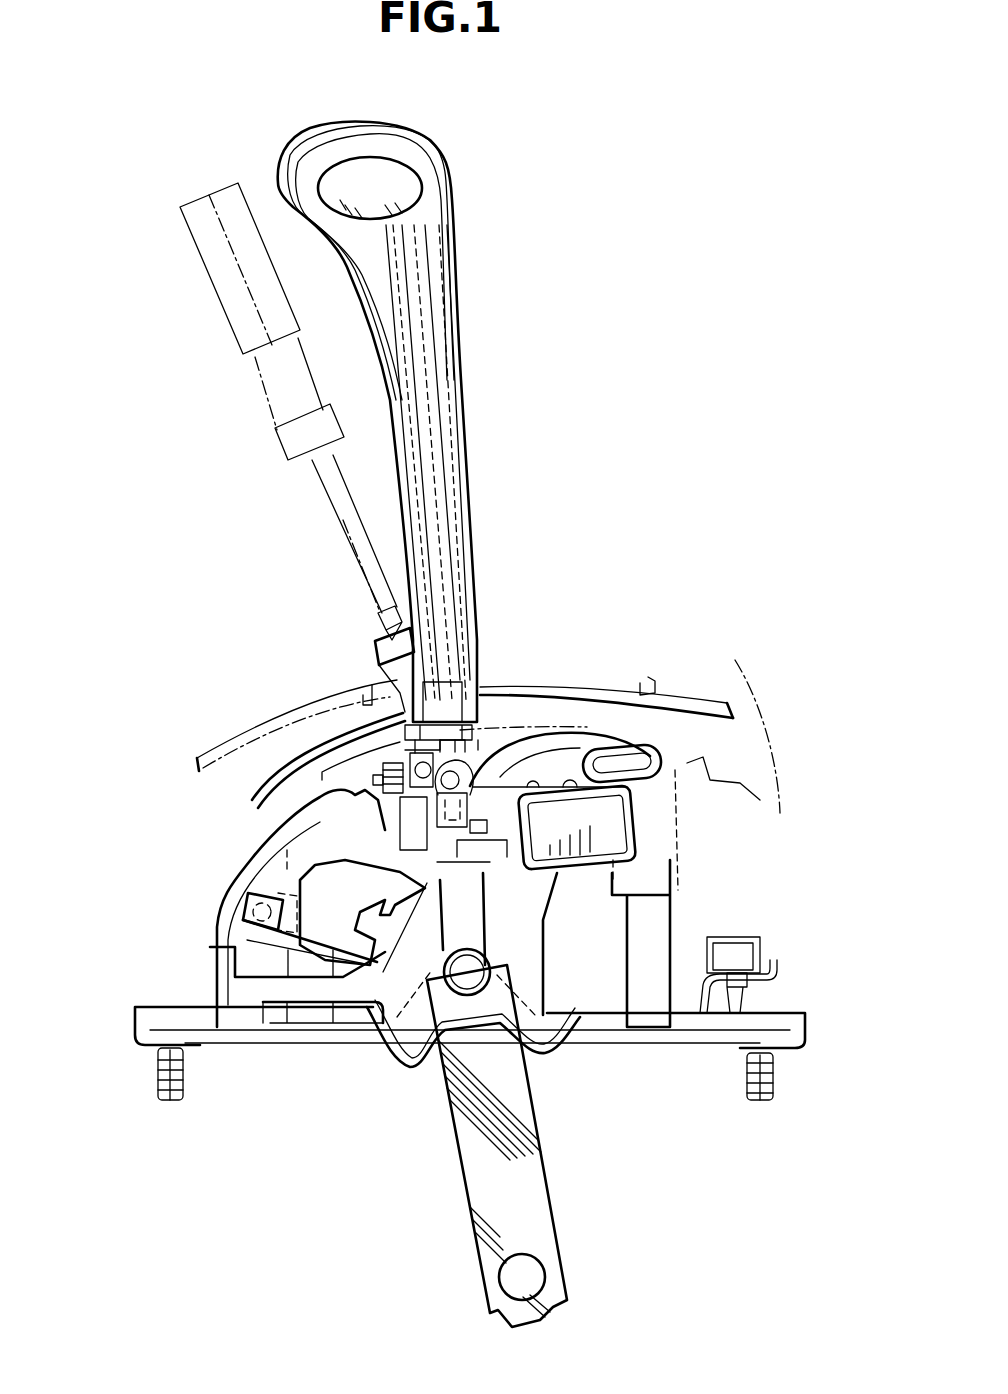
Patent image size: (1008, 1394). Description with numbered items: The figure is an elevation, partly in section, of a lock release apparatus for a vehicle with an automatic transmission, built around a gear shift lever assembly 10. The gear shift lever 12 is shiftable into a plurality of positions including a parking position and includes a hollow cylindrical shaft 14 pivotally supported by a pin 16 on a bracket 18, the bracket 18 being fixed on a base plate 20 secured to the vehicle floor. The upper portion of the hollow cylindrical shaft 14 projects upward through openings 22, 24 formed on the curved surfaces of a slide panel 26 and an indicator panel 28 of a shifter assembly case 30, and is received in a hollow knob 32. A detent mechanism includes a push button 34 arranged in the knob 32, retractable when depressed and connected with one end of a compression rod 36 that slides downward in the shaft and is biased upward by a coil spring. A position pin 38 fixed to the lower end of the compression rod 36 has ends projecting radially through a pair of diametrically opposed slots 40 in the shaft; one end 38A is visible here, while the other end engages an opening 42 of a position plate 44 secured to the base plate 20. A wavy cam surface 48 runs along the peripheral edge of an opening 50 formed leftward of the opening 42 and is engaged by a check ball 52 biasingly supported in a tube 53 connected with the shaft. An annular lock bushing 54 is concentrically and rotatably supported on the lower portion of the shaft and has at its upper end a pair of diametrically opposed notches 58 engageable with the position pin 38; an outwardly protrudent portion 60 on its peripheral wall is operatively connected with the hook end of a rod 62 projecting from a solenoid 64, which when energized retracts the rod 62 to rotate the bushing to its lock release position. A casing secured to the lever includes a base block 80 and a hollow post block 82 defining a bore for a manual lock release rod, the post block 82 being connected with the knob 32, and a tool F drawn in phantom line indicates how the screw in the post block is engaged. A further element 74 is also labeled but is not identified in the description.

The gear shift lever assembly 10 is at (487, 537).
The gear shift lever 12 is at (447, 178).
The hollow cylindrical shaft 14 is at (433, 300).
The pin 16 is at (527, 1003).
The bracket 18 is at (580, 1020).
The base plate 20 is at (773, 1013).
The opening 22 is at (482, 690).
The opening 24 is at (620, 680).
The slide panel 26 is at (273, 733).
The indicator panel 28 is at (200, 753).
The shifter assembly case 30 is at (293, 713).
The hollow knob 32 is at (445, 250).
The push button 34 is at (357, 172).
The compression rod 36 is at (423, 345).
The position pin 38 is at (458, 765).
The end of position pin 38A is at (493, 790).
The slots 40 is at (540, 730).
The opening 42 is at (587, 730).
The position plate 44 is at (660, 742).
The wavy cam surface 48 is at (255, 848).
The opening 50 is at (252, 800).
The check ball 52 is at (253, 920).
The tube 53 is at (240, 962).
The annular lock bushing 54 is at (310, 862).
The notches 58 is at (405, 822).
The outwardly protrudent portion 60 is at (370, 1007).
The rod 62 is at (480, 897).
The solenoid 64 is at (607, 822).
The link 74 is at (400, 803).
The base block 80 is at (393, 767).
The hollow post block 82 is at (373, 650).
The tool F is at (205, 197).